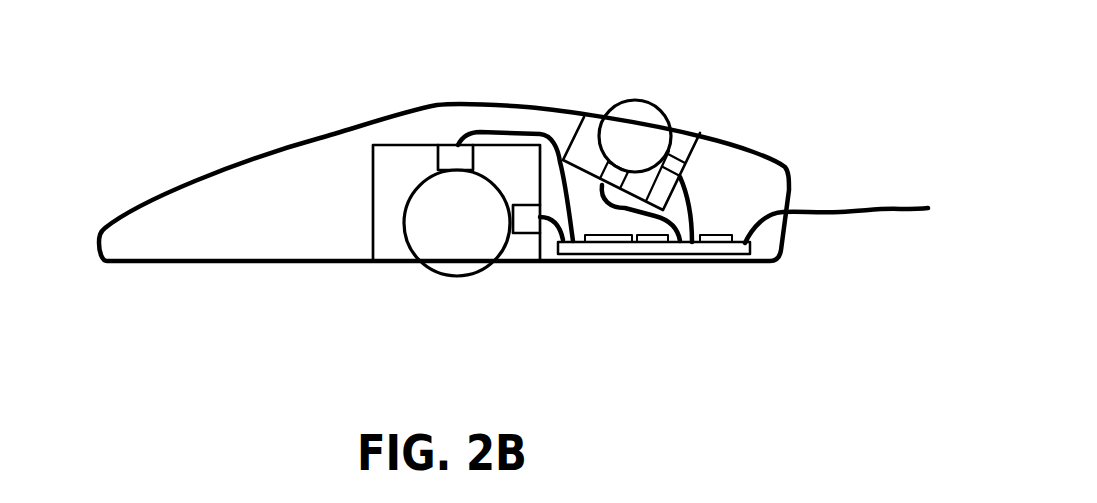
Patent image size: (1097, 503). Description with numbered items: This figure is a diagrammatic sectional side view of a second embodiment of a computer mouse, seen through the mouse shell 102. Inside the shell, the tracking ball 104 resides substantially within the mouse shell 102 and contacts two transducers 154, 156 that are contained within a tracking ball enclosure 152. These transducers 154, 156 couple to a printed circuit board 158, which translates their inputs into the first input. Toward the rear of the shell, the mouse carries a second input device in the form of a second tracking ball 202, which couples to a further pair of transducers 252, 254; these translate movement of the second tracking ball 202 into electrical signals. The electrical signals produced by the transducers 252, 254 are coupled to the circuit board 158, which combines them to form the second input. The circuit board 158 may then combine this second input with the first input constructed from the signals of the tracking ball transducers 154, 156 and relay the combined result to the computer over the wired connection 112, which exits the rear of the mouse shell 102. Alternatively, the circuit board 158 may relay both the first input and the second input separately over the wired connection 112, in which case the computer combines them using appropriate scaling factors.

The mouse shell 102 is at (242, 155).
The tracking ball 104 is at (452, 280).
The wired connection 112 is at (812, 203).
The tracking ball enclosure 152 is at (372, 188).
The transducer 154 is at (448, 144).
The transducer 156 is at (517, 238).
The printed circuit board 158 is at (588, 250).
The second tracking ball 202 is at (653, 102).
The transducer 252 is at (603, 168).
The transducer 254 is at (693, 158).